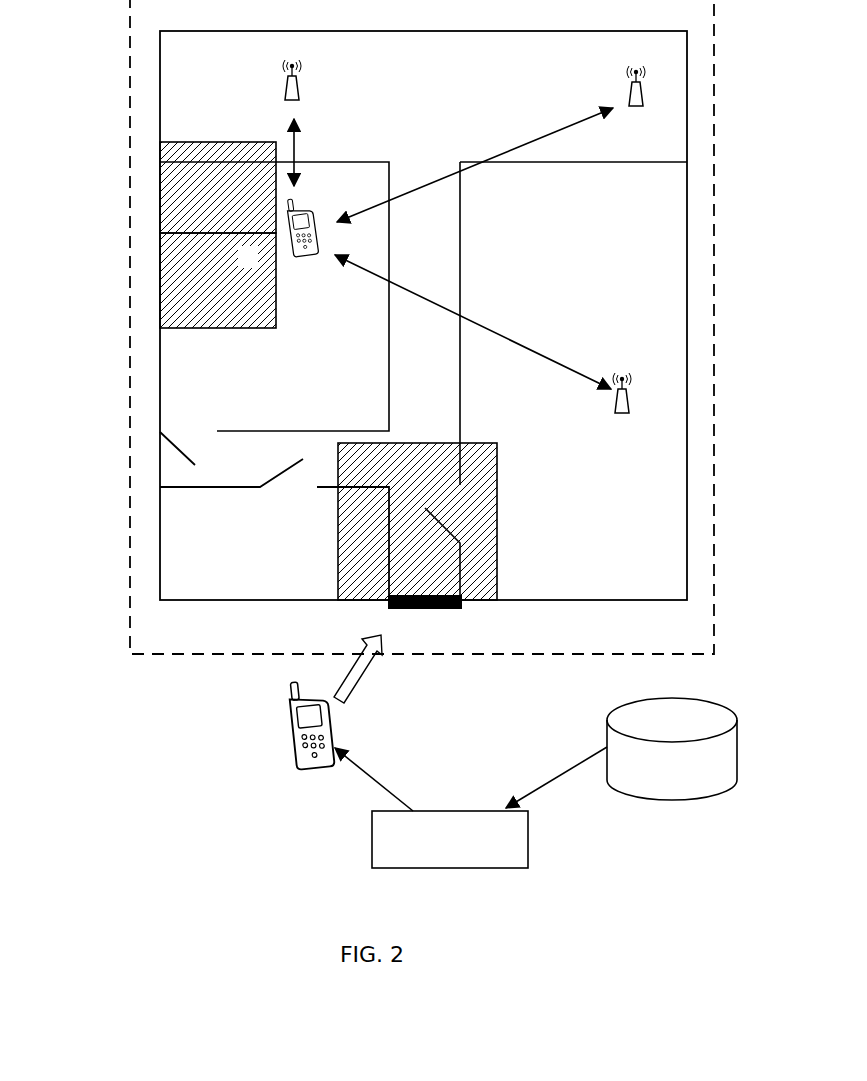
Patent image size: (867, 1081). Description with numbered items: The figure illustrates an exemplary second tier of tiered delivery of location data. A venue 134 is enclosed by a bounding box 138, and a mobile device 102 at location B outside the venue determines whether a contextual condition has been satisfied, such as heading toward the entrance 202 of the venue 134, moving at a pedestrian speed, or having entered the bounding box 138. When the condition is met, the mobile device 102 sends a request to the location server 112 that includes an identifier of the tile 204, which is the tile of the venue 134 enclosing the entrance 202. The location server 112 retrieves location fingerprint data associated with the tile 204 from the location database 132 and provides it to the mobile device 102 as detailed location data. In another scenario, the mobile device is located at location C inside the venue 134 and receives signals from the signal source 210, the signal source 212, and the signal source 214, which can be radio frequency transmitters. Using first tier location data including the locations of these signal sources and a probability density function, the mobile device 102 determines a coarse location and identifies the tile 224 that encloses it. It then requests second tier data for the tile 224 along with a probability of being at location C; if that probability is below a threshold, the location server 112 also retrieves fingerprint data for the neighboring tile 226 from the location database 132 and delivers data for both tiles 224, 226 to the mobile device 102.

The mobile device 102 is at (287, 726).
The location server 112 is at (372, 834).
The location database 132 is at (670, 798).
The venue 134 is at (160, 540).
The bounding box 138 is at (130, 57).
The entrance 202 is at (445, 612).
The tile 204 is at (497, 519).
The signal source 210 is at (298, 80).
The signal source 212 is at (642, 84).
The signal source 214 is at (628, 397).
The tile 224 is at (220, 282).
The tile 226 is at (210, 190).